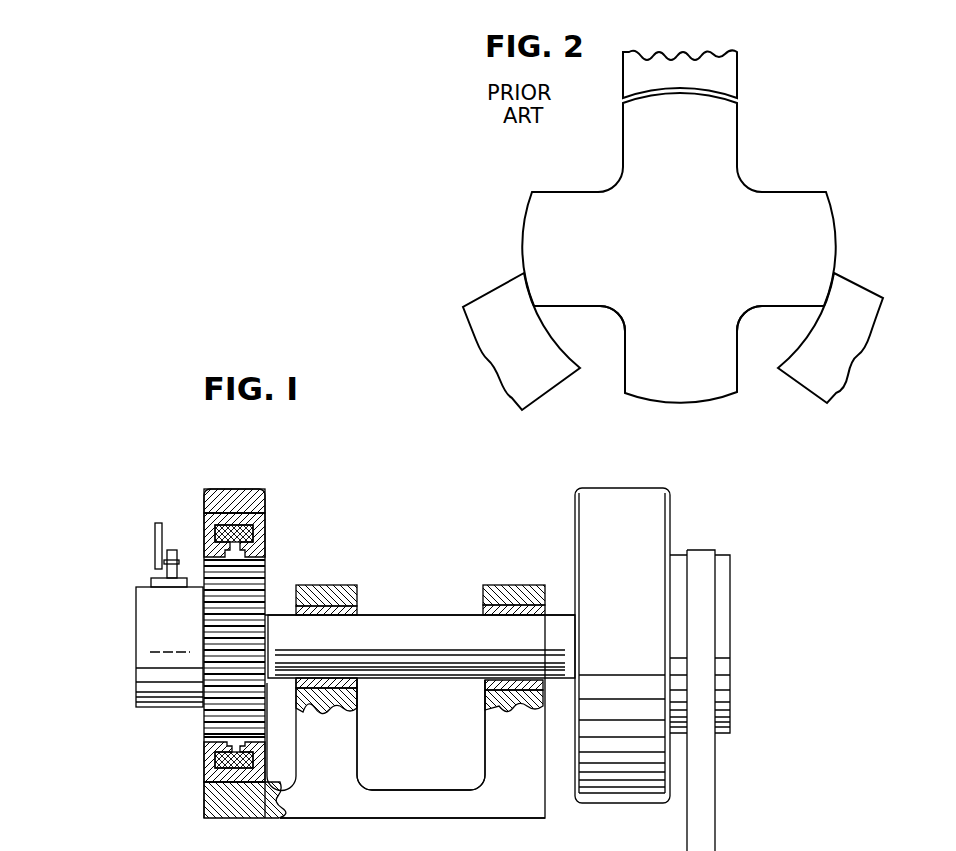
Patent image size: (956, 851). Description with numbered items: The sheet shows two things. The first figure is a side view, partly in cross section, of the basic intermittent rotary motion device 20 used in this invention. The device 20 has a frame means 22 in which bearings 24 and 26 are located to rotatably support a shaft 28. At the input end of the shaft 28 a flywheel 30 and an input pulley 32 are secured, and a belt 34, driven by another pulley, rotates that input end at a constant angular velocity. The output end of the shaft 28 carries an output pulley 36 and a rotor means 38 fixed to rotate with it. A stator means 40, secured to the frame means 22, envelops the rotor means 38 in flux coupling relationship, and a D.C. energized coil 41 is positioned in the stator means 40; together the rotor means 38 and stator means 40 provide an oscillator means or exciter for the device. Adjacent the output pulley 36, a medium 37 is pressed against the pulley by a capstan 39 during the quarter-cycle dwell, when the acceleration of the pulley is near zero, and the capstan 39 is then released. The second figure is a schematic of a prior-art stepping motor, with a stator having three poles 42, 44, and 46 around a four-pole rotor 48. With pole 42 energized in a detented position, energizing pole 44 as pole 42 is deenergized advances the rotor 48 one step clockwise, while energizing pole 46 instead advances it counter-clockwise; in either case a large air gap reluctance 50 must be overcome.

In FIG. 1, the intermittent rotary motion device 20 is at (292, 543).
In FIG. 1, the frame means 22 is at (395, 800).
In FIG. 1, the bearing 24 is at (358, 610).
In FIG. 1, the bearing 26 is at (483, 610).
In FIG. 1, the shaft 28 is at (382, 688).
In FIG. 1, the flywheel 30 is at (620, 497).
In FIG. 1, the input pulley 32 is at (727, 577).
In FIG. 1, the belt 34 is at (707, 802).
In FIG. 1, the output pulley 36 is at (142, 618).
In FIG. 1, the medium 37 is at (150, 583).
In FIG. 1, the rotor means 38 is at (248, 607).
In FIG. 1, the capstan 39 is at (170, 550).
In FIG. 1, the stator means 40 is at (210, 513).
In FIG. 1, the coil 41 is at (223, 530).
In FIG. 2, the pole 42 is at (727, 70).
In FIG. 2, the pole 44 is at (853, 297).
In FIG. 2, the pole 46 is at (493, 303).
In FIG. 2, the rotor 48 is at (723, 222).
In FIG. 2, the air gap reluctance 50 is at (600, 340).